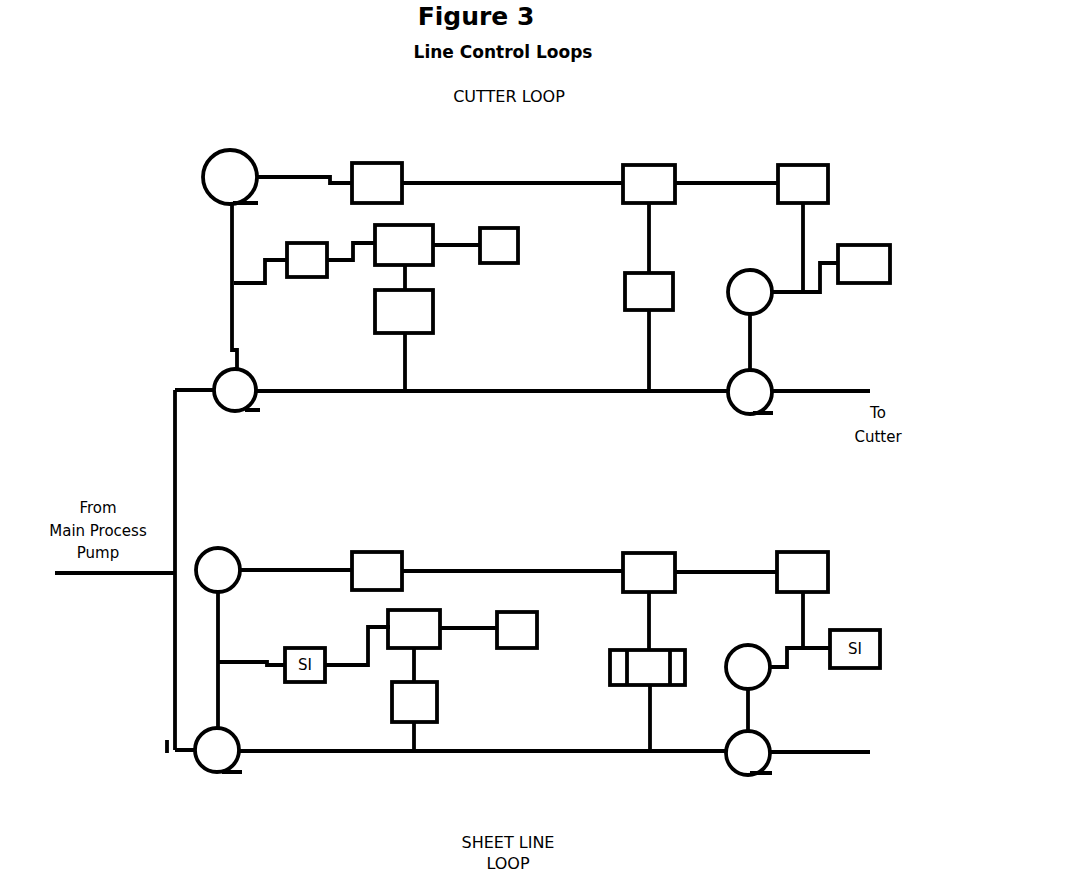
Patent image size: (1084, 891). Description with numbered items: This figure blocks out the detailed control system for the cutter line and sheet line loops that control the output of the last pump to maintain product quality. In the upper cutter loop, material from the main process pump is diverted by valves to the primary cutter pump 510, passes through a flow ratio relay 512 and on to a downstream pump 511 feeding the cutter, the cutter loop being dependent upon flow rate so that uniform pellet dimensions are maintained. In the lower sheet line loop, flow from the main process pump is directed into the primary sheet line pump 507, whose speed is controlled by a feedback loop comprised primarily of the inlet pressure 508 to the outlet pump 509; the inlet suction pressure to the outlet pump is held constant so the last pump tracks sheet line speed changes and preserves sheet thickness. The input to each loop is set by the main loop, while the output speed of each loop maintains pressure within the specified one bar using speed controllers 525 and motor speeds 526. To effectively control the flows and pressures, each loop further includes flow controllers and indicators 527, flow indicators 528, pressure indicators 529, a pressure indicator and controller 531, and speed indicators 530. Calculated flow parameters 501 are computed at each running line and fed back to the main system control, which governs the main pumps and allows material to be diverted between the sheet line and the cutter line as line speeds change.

The motor speed 526 is at (228, 150).
The speed controller 525 is at (375, 163).
The flow indicator 528 is at (500, 228).
The flow ratio relay (FFY) 512 is at (650, 165).
The flow controller and indicator 527 is at (805, 165).
The speed indicator 530 is at (303, 277).
The calculated flow parameters 501 is at (433, 265).
The pressure indicator 529 is at (433, 313).
The primary cutter pump 510 is at (240, 410).
The cutter loop outlet pump 511 is at (752, 413).
The primary sheet line pump 507 is at (217, 772).
The outlet pump 509 is at (747, 773).
The inlet pressure 508 is at (643, 685).
The pressure indicator and controller 531 is at (617, 657).